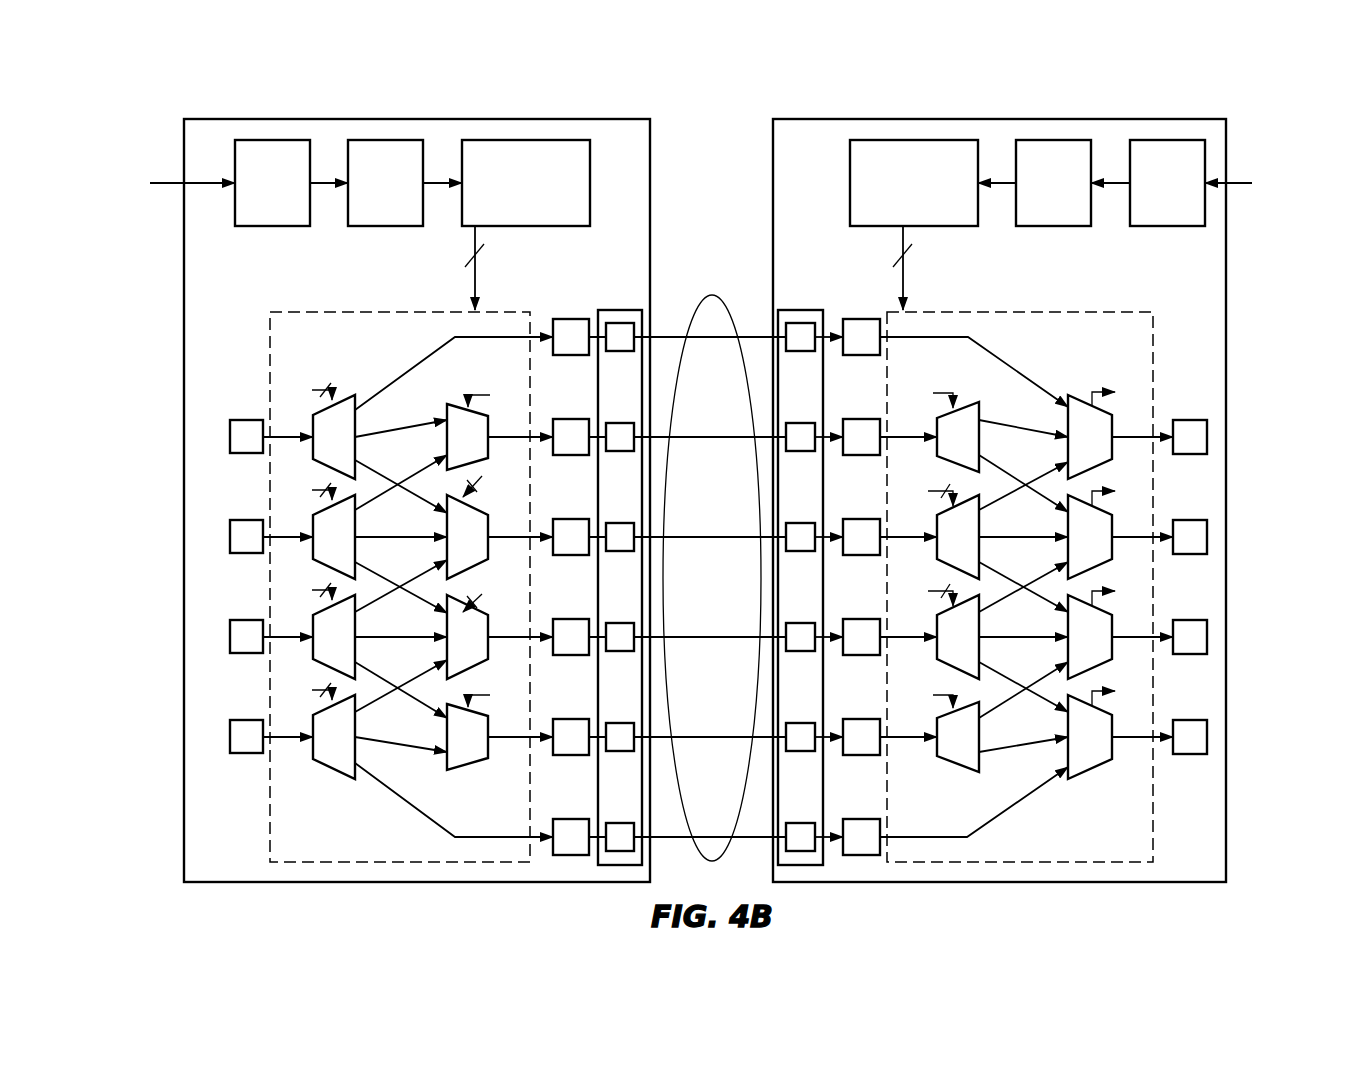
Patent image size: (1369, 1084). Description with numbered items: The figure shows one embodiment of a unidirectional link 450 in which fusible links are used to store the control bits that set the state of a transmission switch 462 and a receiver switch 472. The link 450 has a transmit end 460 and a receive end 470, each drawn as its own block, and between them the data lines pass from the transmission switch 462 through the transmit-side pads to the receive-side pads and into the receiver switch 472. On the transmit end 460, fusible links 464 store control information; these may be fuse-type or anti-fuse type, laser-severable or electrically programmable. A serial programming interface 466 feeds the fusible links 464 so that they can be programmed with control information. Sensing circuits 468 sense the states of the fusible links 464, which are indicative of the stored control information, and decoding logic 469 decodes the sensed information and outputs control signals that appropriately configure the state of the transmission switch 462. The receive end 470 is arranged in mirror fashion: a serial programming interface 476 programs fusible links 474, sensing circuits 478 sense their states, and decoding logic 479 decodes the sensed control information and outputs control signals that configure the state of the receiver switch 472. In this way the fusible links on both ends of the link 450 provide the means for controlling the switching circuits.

The unidirectional link 450 is at (750, 116).
The transmit end 460 is at (183, 294).
The transmission switch 462 is at (270, 355).
The fusible links 464 is at (272, 140).
The serial programming interface 466 is at (196, 182).
The sensing circuits 468 is at (385, 140).
The decoding logic 469 is at (523, 140).
The receive end 470 is at (1227, 294).
The receiver switch 472 is at (1153, 355).
The fusible links 474 is at (1165, 140).
The serial programming interface 476 is at (1234, 182).
The sensing circuits 478 is at (1052, 140).
The decoding logic 479 is at (912, 140).